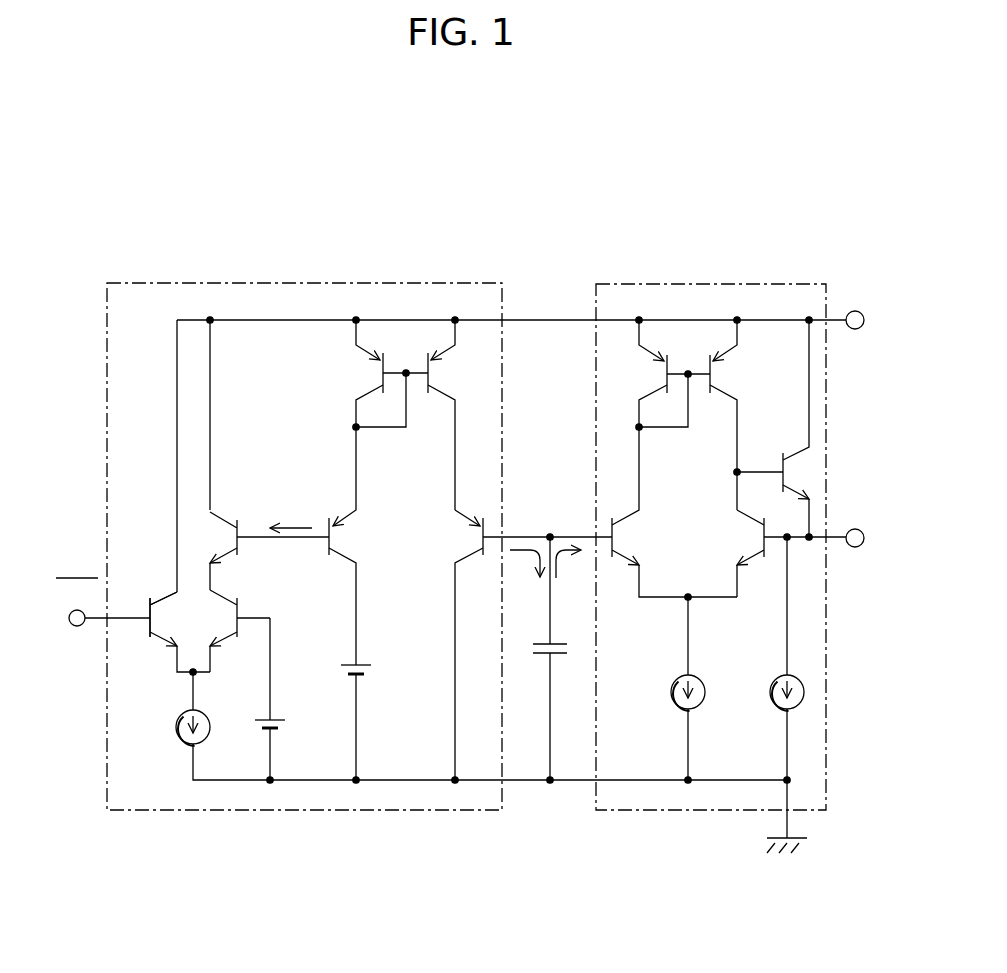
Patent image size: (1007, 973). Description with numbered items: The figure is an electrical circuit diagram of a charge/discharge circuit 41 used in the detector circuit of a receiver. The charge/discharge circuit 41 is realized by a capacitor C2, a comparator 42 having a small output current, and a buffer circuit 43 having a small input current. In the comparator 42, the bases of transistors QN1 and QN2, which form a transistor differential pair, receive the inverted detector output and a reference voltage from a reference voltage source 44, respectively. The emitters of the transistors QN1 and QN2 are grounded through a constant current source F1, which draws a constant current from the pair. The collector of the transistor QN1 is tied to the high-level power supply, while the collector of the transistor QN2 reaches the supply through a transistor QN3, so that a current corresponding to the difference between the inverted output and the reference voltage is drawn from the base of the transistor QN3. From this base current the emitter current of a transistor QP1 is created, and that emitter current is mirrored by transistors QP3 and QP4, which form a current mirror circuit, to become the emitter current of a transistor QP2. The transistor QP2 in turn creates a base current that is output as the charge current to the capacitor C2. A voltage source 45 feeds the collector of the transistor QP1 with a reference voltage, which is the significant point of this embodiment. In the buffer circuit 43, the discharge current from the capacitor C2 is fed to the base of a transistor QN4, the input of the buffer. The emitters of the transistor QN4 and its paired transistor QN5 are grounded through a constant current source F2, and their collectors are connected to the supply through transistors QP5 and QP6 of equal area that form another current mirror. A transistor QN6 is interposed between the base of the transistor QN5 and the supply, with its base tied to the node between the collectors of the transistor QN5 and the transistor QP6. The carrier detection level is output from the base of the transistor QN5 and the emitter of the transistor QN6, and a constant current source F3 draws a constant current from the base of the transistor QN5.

The charge/discharge circuit 41 is at (396, 178).
The comparator 42 is at (291, 282).
The buffer circuit 43 is at (702, 282).
The reference voltage source 44 is at (273, 718).
The voltage source 45 is at (360, 663).
The transistor QN1 is at (148, 640).
The transistor QN2 is at (242, 605).
The transistor QN3 is at (244, 515).
The transistor QN4 is at (616, 520).
The transistor QN5 is at (762, 542).
The transistor QN6 is at (785, 463).
The transistor QP1 is at (333, 553).
The transistor QP2 is at (480, 546).
The transistor QP3 is at (380, 385).
The transistor QP4 is at (424, 388).
The transistor QP5 is at (670, 372).
The transistor QP6 is at (713, 385).
The constant current source F1 is at (176, 727).
The constant current source F2 is at (674, 681).
The constant current source F3 is at (773, 681).
The capacitor C2 is at (556, 657).